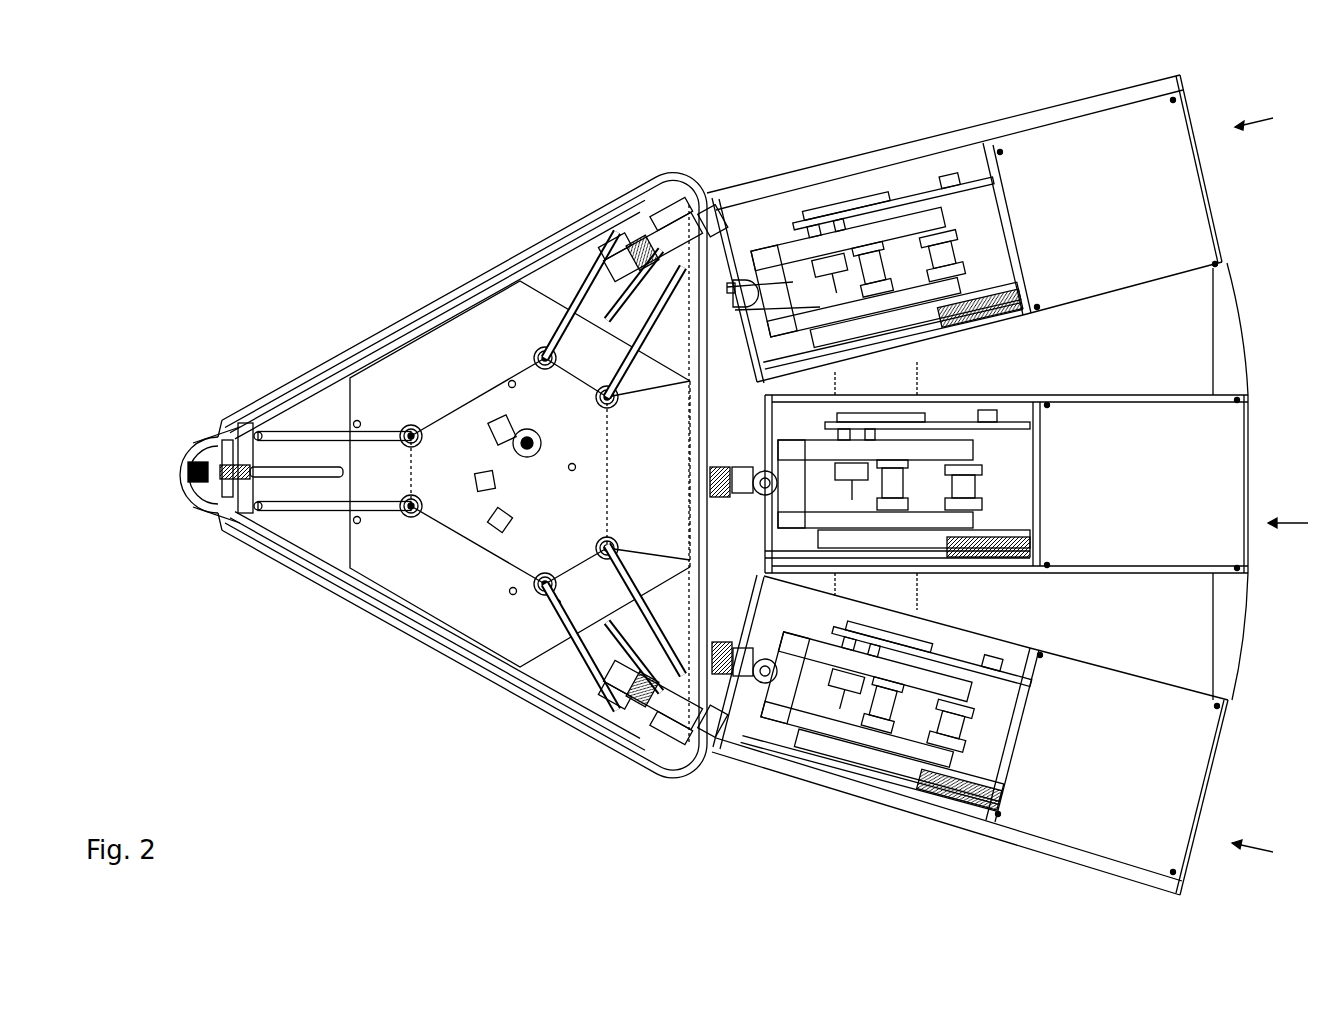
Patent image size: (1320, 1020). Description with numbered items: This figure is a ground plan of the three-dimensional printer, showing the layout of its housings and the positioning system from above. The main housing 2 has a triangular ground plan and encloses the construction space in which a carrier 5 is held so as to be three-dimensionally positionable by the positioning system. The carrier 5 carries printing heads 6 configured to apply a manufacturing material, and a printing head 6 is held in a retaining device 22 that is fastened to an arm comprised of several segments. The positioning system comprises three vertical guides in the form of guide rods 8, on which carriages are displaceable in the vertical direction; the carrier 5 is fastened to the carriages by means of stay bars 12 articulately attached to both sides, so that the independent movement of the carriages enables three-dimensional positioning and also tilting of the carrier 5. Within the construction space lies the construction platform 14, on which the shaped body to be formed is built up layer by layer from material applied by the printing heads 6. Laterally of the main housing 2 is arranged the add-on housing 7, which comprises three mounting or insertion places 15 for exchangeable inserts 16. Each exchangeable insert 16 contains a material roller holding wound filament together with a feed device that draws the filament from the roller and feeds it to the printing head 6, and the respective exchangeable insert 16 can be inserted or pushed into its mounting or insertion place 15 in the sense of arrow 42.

The main housing 2 is at (417, 316).
The carrier 5 is at (470, 510).
The printing heads 6 is at (530, 458).
The add-on housing 7 is at (1037, 110).
The guide rods 8 is at (237, 490).
The stay bars 12 is at (321, 502).
The construction platform 14 is at (480, 330).
The mounting or insertion places 15 is at (1187, 185).
The exchangeable inserts 16 is at (965, 213).
The retaining device 22 is at (763, 290).
The arrow 42 is at (1273, 470).